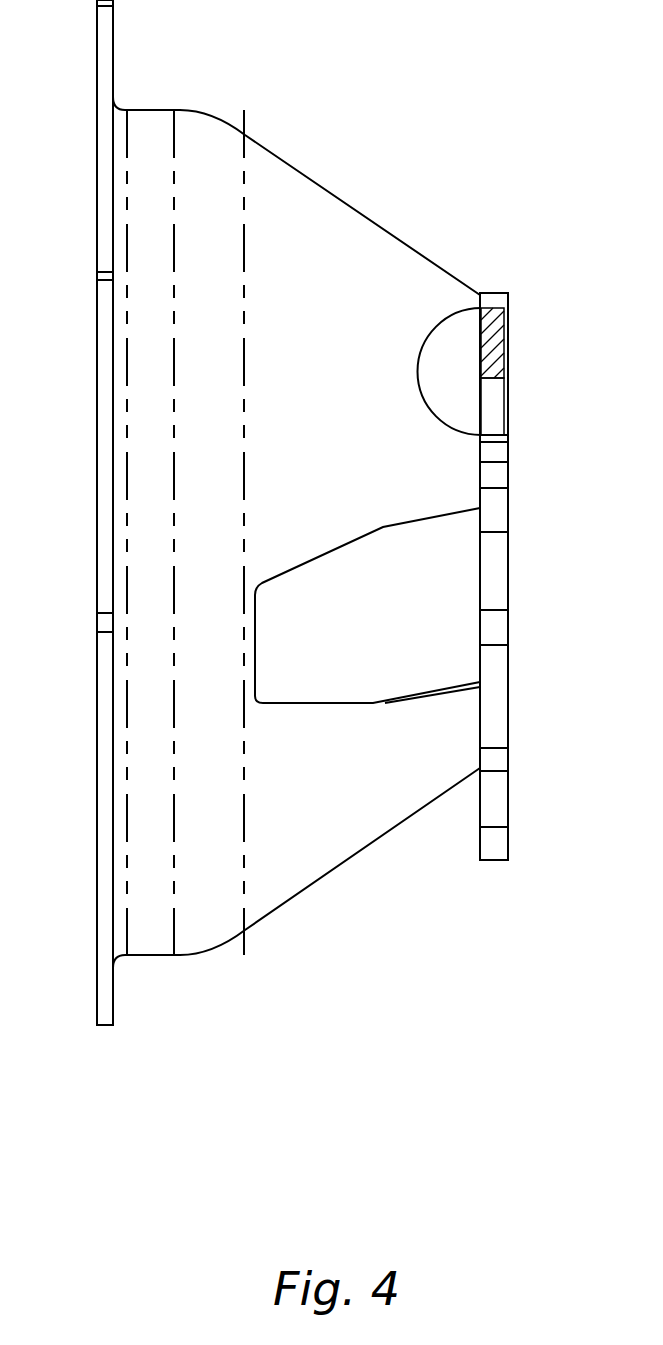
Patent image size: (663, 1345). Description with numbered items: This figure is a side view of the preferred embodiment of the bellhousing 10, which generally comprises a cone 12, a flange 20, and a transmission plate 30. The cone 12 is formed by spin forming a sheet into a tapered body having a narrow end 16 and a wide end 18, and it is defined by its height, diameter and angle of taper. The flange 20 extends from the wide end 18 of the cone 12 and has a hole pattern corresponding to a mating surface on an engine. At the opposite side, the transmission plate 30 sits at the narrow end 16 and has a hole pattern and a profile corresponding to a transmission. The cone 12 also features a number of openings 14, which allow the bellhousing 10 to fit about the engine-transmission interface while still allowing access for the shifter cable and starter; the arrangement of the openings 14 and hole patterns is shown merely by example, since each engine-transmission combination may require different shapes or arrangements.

The bellhousing 10 is at (452, 132).
The cone 12 is at (374, 229).
The openings 14 is at (463, 407).
The narrow end 16 is at (478, 294).
The wide end 18 is at (157, 109).
The flange 20 is at (99, 25).
The transmission plate 30 is at (494, 861).